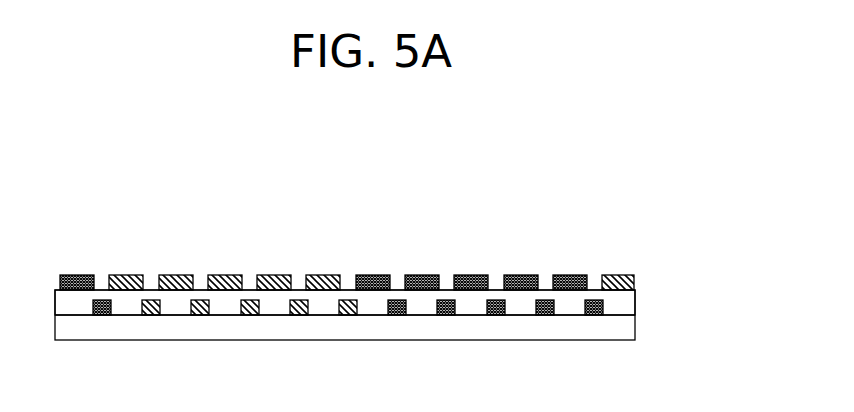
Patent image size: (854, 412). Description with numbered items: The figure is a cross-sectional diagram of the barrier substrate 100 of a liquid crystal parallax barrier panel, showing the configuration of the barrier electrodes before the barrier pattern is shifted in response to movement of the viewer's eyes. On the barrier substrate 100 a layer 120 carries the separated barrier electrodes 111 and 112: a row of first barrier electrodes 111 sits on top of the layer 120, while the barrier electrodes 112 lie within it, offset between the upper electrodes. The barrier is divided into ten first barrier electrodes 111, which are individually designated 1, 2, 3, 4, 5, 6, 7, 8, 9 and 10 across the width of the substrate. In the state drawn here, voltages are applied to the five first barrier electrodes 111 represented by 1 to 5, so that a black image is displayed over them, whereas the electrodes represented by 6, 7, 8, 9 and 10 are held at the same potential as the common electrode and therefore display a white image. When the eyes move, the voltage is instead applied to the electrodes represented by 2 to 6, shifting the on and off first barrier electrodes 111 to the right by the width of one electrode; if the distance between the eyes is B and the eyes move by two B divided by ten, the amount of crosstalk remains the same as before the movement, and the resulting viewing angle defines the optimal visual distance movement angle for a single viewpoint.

The barrier substrate 100 is at (625, 335).
The insulating layer 120 is at (625, 303).
The first barrier electrode 111 is at (73, 275).
The barrier electrode 112 is at (102, 315).
The first barrier electrode designation 1 is at (131, 275).
The first barrier electrode designation 2 is at (175, 275).
The first barrier electrode designation 3 is at (226, 275).
The first barrier electrode designation 4 is at (277, 275).
The first barrier electrode designation 5 is at (327, 275).
The first barrier electrode designation 6 is at (370, 275).
The first barrier electrode designation 7 is at (422, 275).
The first barrier electrode designation 8 is at (468, 275).
The first barrier electrode designation 9 is at (520, 275).
The first barrier electrode designation 10 is at (565, 275).